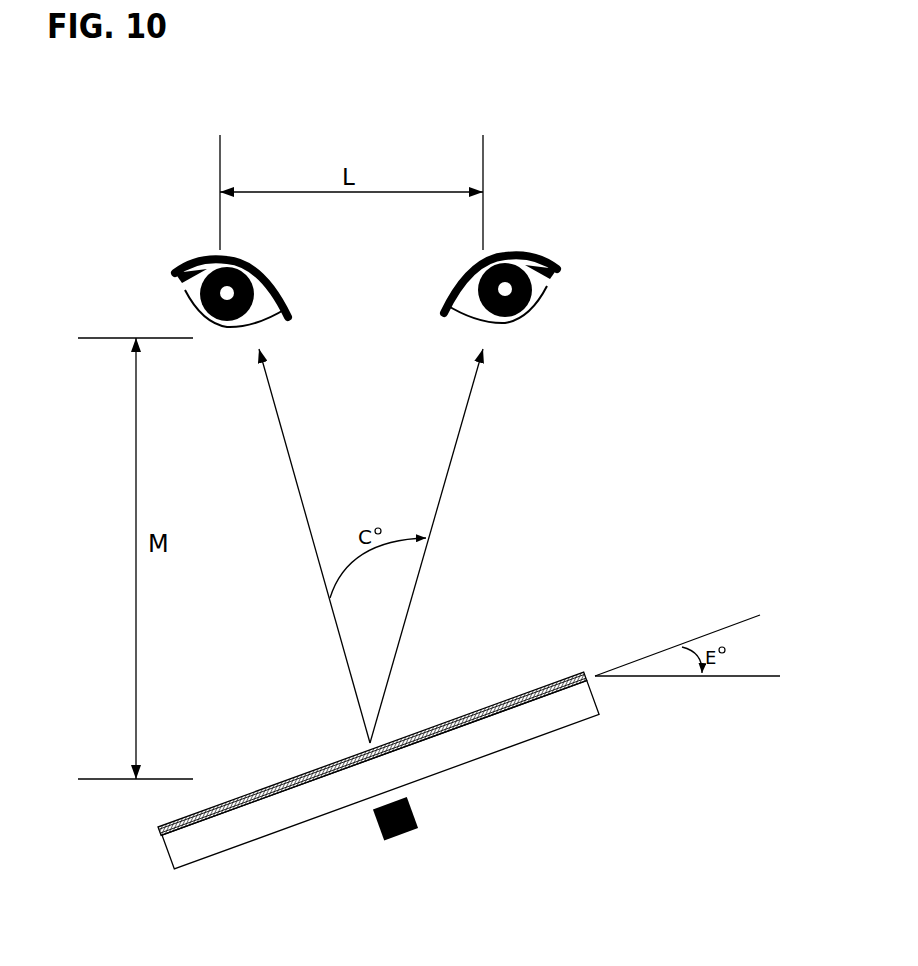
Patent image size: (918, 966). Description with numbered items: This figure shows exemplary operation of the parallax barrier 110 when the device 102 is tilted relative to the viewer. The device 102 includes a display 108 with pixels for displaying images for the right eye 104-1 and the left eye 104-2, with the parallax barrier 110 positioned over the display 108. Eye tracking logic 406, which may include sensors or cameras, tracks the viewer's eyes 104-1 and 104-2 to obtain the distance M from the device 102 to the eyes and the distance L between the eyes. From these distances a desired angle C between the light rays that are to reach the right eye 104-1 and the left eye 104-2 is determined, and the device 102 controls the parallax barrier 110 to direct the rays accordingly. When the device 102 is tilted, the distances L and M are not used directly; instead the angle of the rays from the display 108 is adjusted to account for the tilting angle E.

The device 102 is at (374, 779).
The right eye 104-1 is at (203, 264).
The left eye 104-2 is at (531, 256).
The display 108 is at (563, 703).
The parallax barrier 110 is at (298, 785).
The eye tracking logic 406 is at (405, 837).